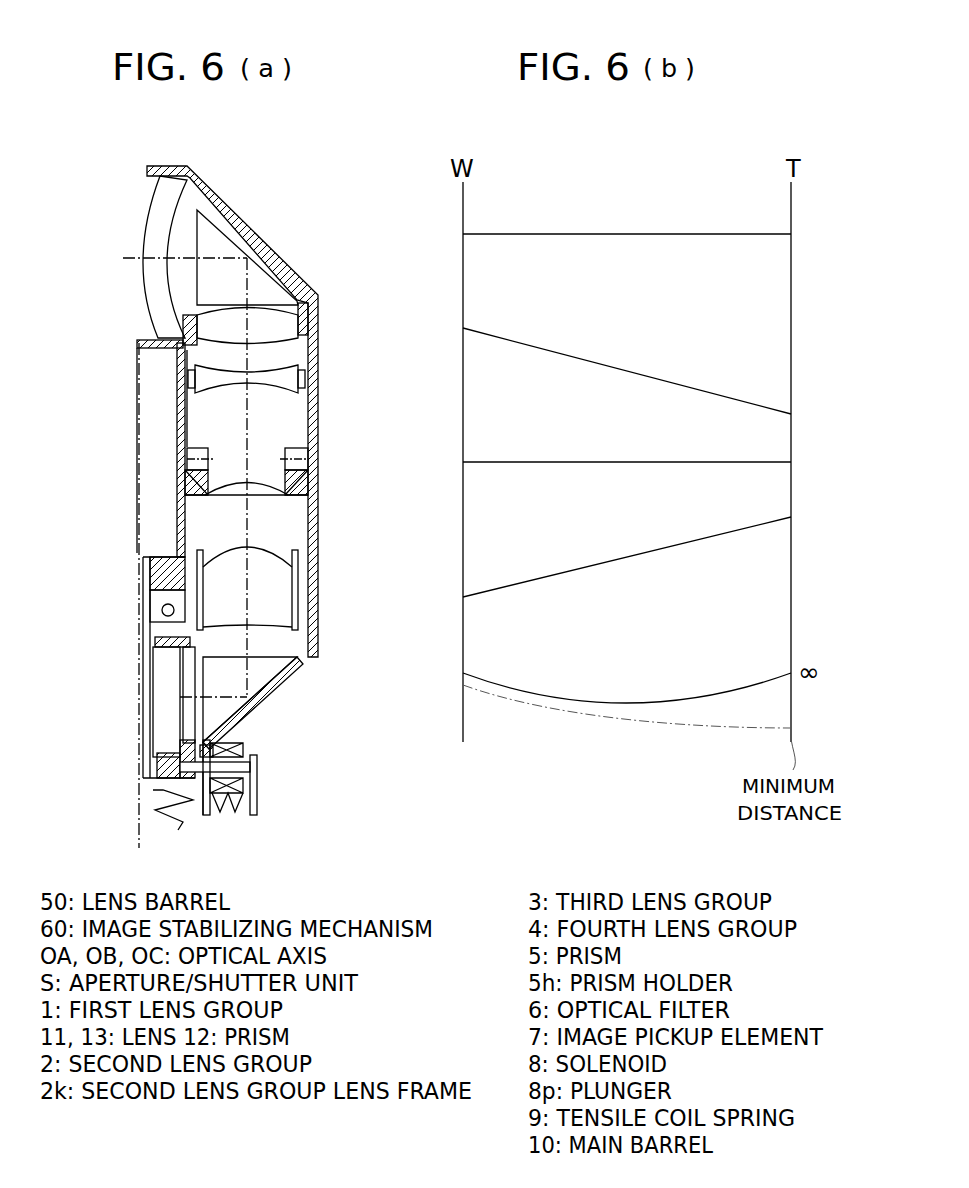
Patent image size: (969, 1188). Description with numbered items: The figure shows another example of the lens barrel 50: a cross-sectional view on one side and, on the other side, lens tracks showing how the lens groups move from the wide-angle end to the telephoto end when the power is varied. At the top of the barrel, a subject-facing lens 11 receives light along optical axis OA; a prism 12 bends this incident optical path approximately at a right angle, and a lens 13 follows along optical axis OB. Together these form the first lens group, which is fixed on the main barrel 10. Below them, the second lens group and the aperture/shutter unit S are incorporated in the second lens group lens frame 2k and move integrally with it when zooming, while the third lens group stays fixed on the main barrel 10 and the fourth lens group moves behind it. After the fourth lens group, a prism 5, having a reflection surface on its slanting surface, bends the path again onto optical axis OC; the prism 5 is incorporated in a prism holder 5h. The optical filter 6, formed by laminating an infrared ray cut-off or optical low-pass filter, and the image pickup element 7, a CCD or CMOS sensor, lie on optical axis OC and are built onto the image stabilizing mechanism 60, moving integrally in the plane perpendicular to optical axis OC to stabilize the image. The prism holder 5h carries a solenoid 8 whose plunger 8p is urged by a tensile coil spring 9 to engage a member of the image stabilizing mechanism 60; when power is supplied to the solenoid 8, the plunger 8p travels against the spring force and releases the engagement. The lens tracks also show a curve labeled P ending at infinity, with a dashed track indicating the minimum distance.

The lens barrel 50 is at (364, 239).
The image stabilizing mechanism 60 is at (131, 769).
The optical axis OA is at (130, 258).
The optical axis OB is at (247, 420).
The optical axis OC is at (220, 700).
The aperture/shutter unit S is at (307, 455).
The lens 11 is at (175, 185).
The prism 12 is at (213, 237).
The lens 13 is at (268, 318).
The second lens group lens frame 2k is at (320, 368).
The prism 5 is at (267, 668).
The prism holder 5h is at (257, 700).
The optical filter 6 is at (192, 683).
The image pickup element 7 is at (170, 722).
The solenoid 8 is at (252, 790).
The plunger 8p is at (258, 767).
The tensile coil spring 9 is at (225, 815).
The main barrel 10 is at (313, 550).
The prism position P is at (615, 694).